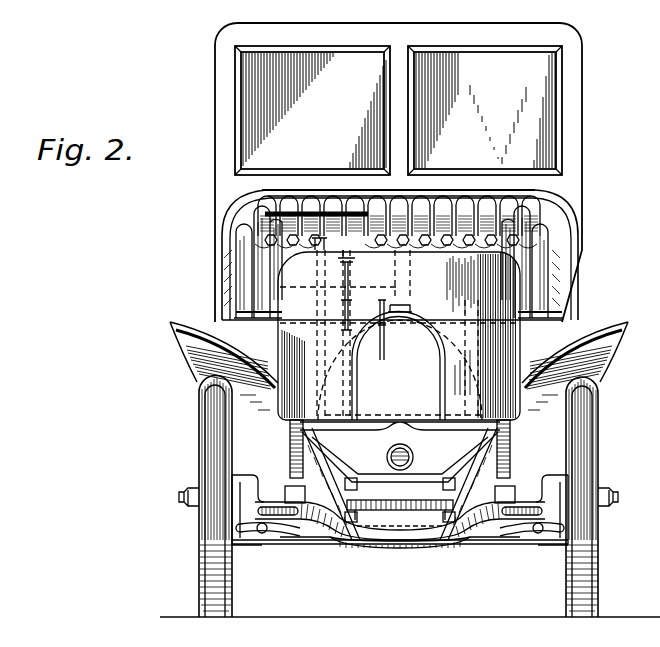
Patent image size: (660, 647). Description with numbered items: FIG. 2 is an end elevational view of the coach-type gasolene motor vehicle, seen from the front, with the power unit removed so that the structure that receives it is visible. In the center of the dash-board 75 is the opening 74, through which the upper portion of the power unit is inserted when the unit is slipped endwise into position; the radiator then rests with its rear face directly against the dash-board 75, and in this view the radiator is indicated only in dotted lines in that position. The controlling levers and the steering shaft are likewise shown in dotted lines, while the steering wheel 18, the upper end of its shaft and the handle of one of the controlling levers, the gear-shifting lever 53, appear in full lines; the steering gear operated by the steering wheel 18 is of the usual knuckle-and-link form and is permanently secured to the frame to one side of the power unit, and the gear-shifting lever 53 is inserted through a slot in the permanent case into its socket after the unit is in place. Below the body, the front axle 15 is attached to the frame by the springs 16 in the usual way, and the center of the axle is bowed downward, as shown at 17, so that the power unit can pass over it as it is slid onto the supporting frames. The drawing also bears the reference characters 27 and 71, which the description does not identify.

The front axle 15 is at (506, 522).
The springs 16 is at (290, 445).
The bowed-down center of the front axle 17 is at (407, 550).
The steering wheel 18 is at (288, 190).
The body panel 27 is at (476, 382).
The gear-shifting lever 53 is at (338, 274).
The post 71 is at (352, 300).
The opening in the dash-board 74 is at (398, 362).
The dash-board 75 is at (503, 272).